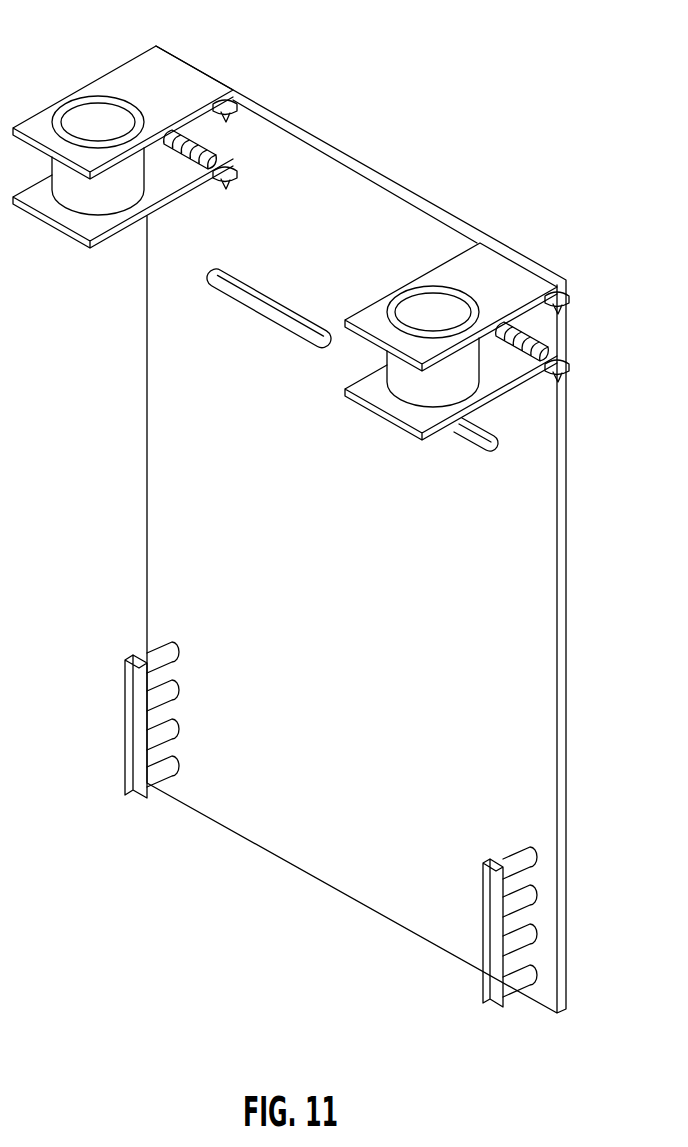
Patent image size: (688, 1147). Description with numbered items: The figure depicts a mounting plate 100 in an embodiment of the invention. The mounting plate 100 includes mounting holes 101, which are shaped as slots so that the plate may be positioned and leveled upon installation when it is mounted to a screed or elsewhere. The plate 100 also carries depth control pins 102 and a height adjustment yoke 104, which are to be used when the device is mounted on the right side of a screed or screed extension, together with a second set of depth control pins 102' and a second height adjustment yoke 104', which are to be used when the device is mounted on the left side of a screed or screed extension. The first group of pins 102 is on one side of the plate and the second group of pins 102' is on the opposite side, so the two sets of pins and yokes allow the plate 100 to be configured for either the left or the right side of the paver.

The mounting plate 100 is at (167, 484).
The mounting holes 101 is at (238, 298).
The depth control pins 102 is at (530, 953).
The depth control pins 102' is at (107, 720).
The height adjustment yoke 104 is at (125, 135).
The height adjustment yoke 104' is at (474, 333).